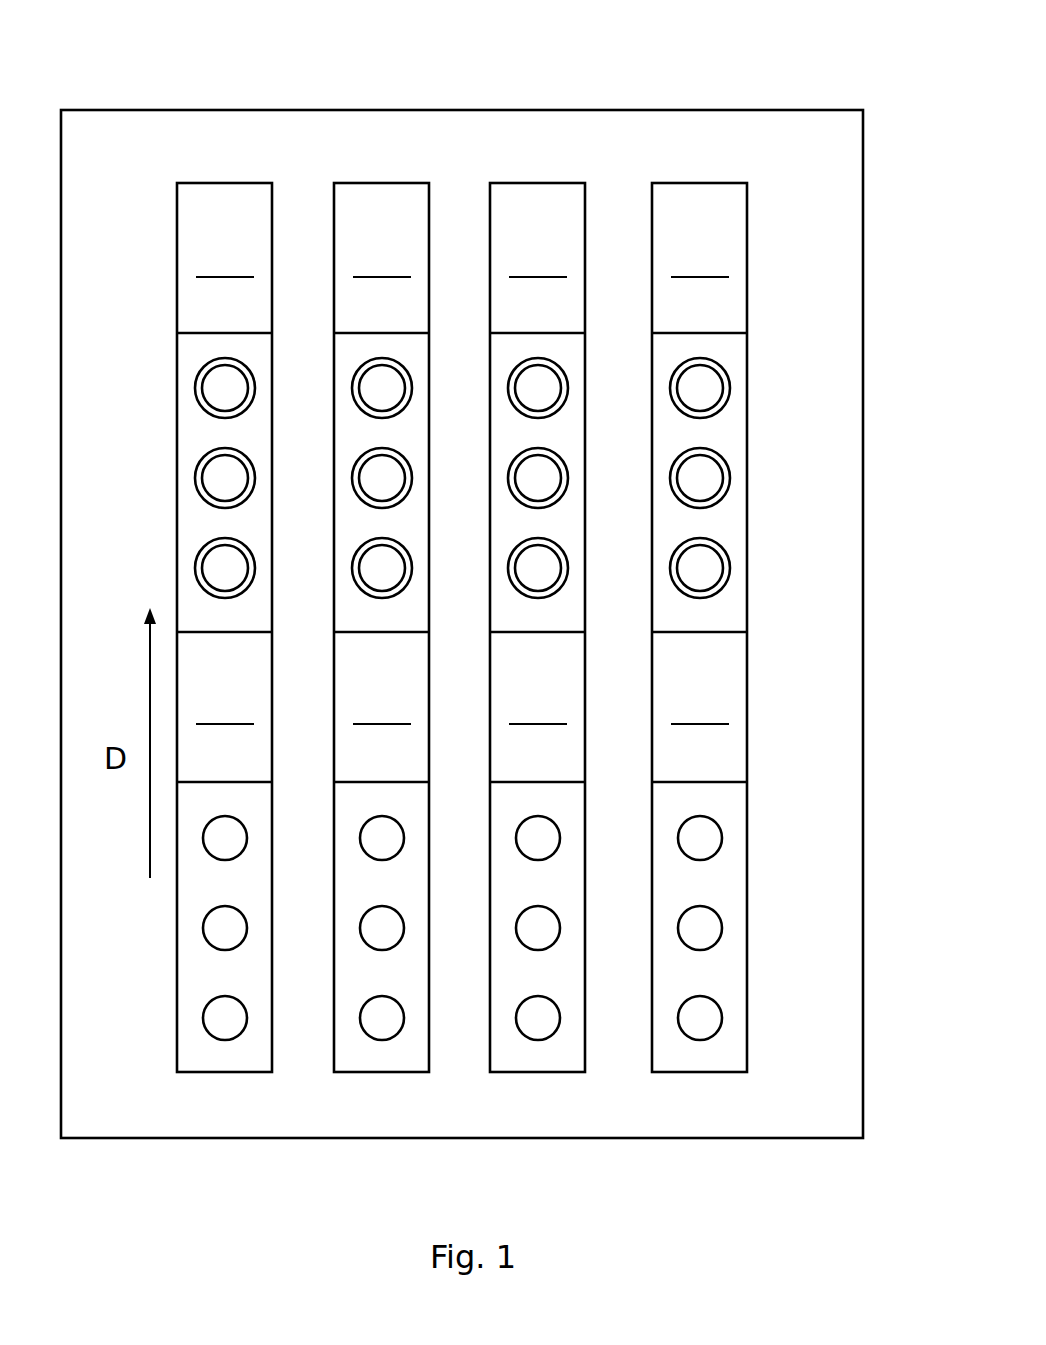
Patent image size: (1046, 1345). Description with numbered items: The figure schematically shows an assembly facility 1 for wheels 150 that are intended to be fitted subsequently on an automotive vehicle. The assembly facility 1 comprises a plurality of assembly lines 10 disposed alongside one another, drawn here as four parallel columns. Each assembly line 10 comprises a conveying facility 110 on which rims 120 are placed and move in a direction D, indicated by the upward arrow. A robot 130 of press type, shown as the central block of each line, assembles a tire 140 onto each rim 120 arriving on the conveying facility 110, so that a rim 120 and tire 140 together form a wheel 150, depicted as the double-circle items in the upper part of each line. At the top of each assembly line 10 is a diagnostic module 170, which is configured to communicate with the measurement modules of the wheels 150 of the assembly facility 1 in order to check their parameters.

The assembly facility 1 is at (783, 104).
The assembly line 10 is at (217, 1081).
The conveying facility 110 is at (172, 350).
The rim 120 is at (722, 838).
The robot 130 is at (462, 736).
The tire 140 is at (730, 388).
The wheel 150 is at (192, 414).
The diagnostic module 170 is at (462, 261).